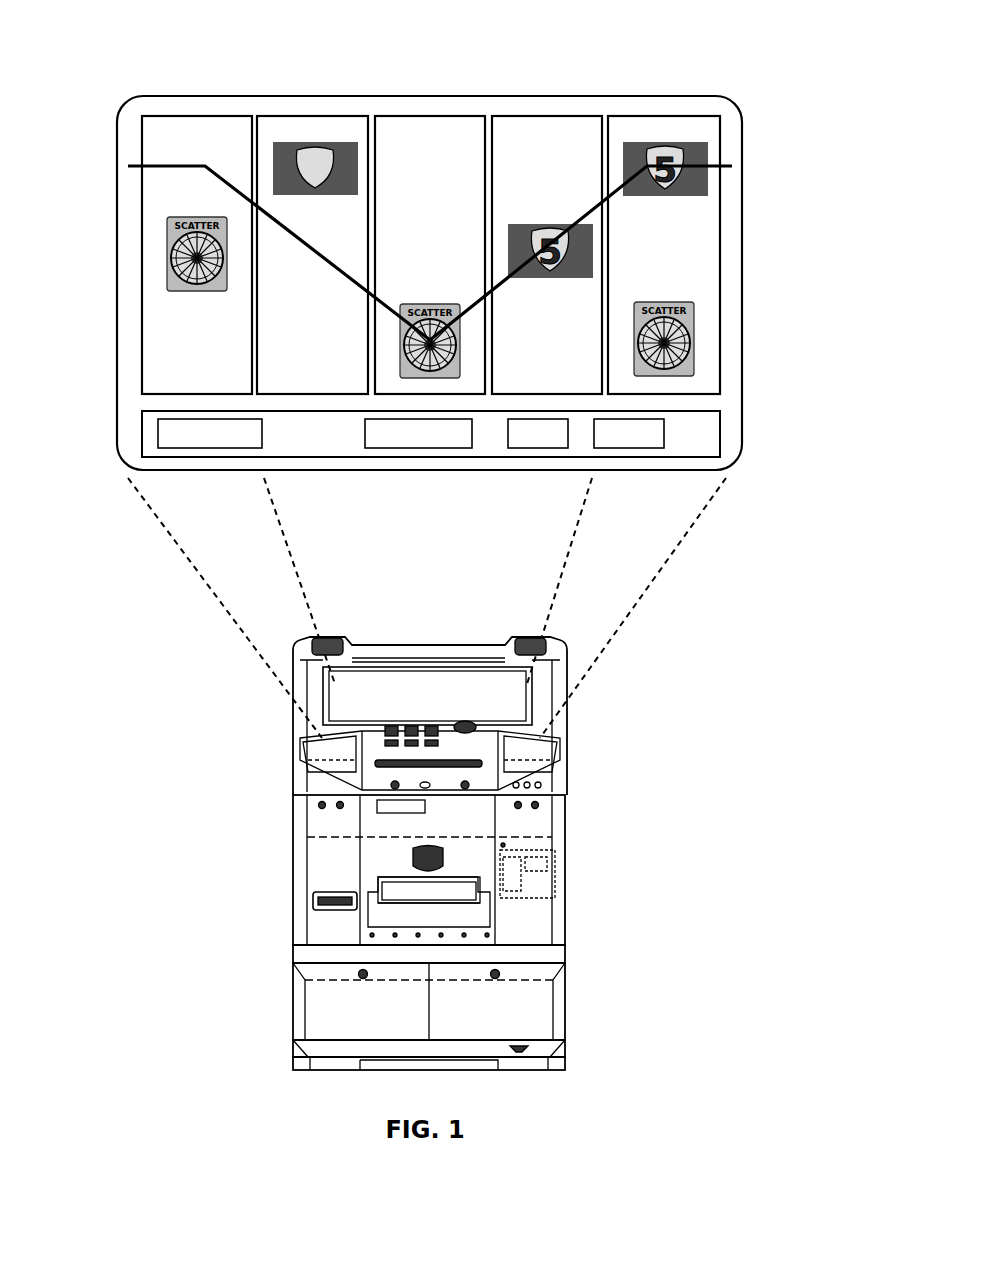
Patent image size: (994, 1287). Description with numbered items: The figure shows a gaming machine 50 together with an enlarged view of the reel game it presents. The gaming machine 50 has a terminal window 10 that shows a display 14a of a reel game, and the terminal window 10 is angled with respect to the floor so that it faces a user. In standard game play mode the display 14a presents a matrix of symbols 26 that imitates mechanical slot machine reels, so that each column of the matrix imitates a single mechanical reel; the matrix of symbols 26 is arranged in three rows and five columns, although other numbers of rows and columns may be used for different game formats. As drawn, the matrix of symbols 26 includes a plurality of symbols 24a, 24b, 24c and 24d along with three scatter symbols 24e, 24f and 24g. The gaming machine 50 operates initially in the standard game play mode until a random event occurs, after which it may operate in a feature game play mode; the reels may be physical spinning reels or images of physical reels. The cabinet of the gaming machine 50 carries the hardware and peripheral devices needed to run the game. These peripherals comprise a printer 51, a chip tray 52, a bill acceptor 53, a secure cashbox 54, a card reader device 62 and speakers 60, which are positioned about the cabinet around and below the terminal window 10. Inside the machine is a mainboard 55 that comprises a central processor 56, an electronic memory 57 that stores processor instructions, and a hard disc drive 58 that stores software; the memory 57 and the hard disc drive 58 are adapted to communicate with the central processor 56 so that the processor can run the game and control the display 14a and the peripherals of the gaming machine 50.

The display 14a is at (437, 250).
The symbol 24a is at (206, 150).
The symbol 24b is at (333, 248).
The symbol 24c is at (503, 250).
The symbol 24d is at (650, 150).
The scatter symbol 24e is at (175, 262).
The scatter symbol 24f is at (425, 372).
The scatter symbol 24g is at (690, 342).
The matrix of symbols 26 is at (160, 168).
The gaming machine 50 is at (413, 606).
The speakers 60 is at (330, 640).
The terminal window 10 is at (335, 690).
The card reader device 62 is at (325, 752).
The chip tray 52 is at (548, 733).
The bill acceptor 53 is at (565, 762).
The printer 51 is at (313, 902).
The secure cashbox 54 is at (478, 915).
The mainboard 55 is at (557, 890).
The central processor 56 is at (515, 880).
The electronic memory 57 is at (535, 860).
The hard disc drive 58 is at (512, 858).